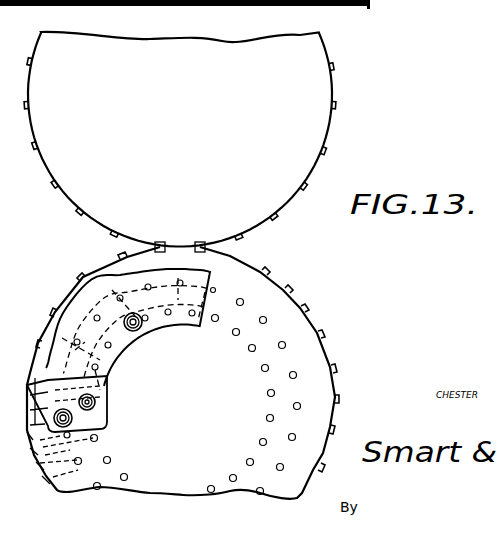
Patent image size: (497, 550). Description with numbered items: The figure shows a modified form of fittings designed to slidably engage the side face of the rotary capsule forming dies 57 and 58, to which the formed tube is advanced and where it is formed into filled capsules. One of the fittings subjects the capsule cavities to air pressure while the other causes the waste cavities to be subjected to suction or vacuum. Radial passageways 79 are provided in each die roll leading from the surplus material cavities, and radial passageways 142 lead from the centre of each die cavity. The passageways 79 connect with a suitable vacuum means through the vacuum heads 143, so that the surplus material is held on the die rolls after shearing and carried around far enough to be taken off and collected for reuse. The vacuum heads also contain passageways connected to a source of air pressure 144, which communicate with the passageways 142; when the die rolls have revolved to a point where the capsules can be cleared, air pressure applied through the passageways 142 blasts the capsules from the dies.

The rotary capsule forming die 57 is at (312, 97).
The rotary capsule forming die 58 is at (242, 278).
The radial passageways 142 is at (244, 301).
The radial passageways 79 is at (249, 351).
The vacuum head 143 is at (137, 331).
The source of air pressure 144 is at (104, 413).